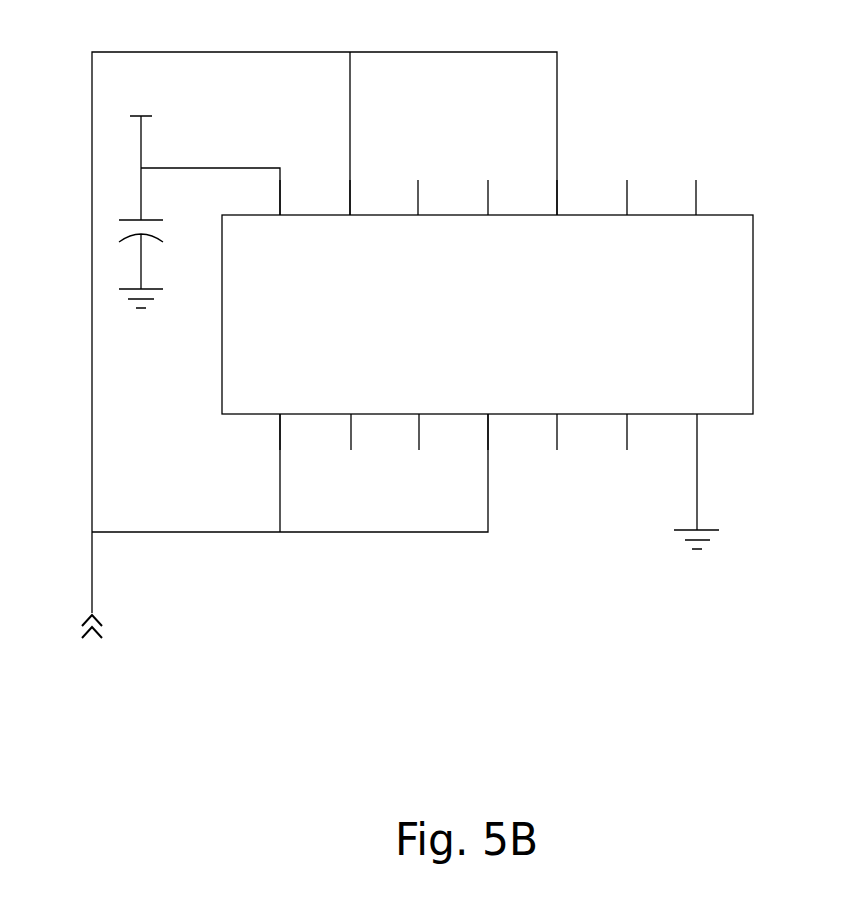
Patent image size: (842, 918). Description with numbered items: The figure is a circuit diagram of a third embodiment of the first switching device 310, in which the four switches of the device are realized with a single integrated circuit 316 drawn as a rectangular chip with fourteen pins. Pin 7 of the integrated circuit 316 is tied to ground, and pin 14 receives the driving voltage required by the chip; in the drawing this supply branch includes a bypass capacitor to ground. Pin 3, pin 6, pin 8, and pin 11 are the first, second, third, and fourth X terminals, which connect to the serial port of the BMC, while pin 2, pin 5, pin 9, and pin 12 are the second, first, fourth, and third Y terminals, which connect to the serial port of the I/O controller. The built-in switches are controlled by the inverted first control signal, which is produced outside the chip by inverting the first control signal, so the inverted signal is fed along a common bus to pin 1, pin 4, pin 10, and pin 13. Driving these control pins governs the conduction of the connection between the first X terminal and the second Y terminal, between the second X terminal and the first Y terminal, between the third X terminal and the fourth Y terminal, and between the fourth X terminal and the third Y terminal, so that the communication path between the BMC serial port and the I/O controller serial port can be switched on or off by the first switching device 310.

The first switching device 310 is at (451, 381).
The integrated circuit 316 is at (521, 338).
The pin 1 is at (277, 413).
The pin 2 is at (350, 413).
The pin 3 is at (418, 413).
The pin 4 is at (487, 413).
The pin 5 is at (556, 413).
The pin 6 is at (626, 413).
The pin 7 is at (695, 453).
The pin 8 is at (695, 218).
The pin 9 is at (626, 218).
The pin 10 is at (557, 218).
The pin 11 is at (488, 218).
The pin 12 is at (418, 218).
The pin 13 is at (350, 218).
The pin 14 is at (278, 218).